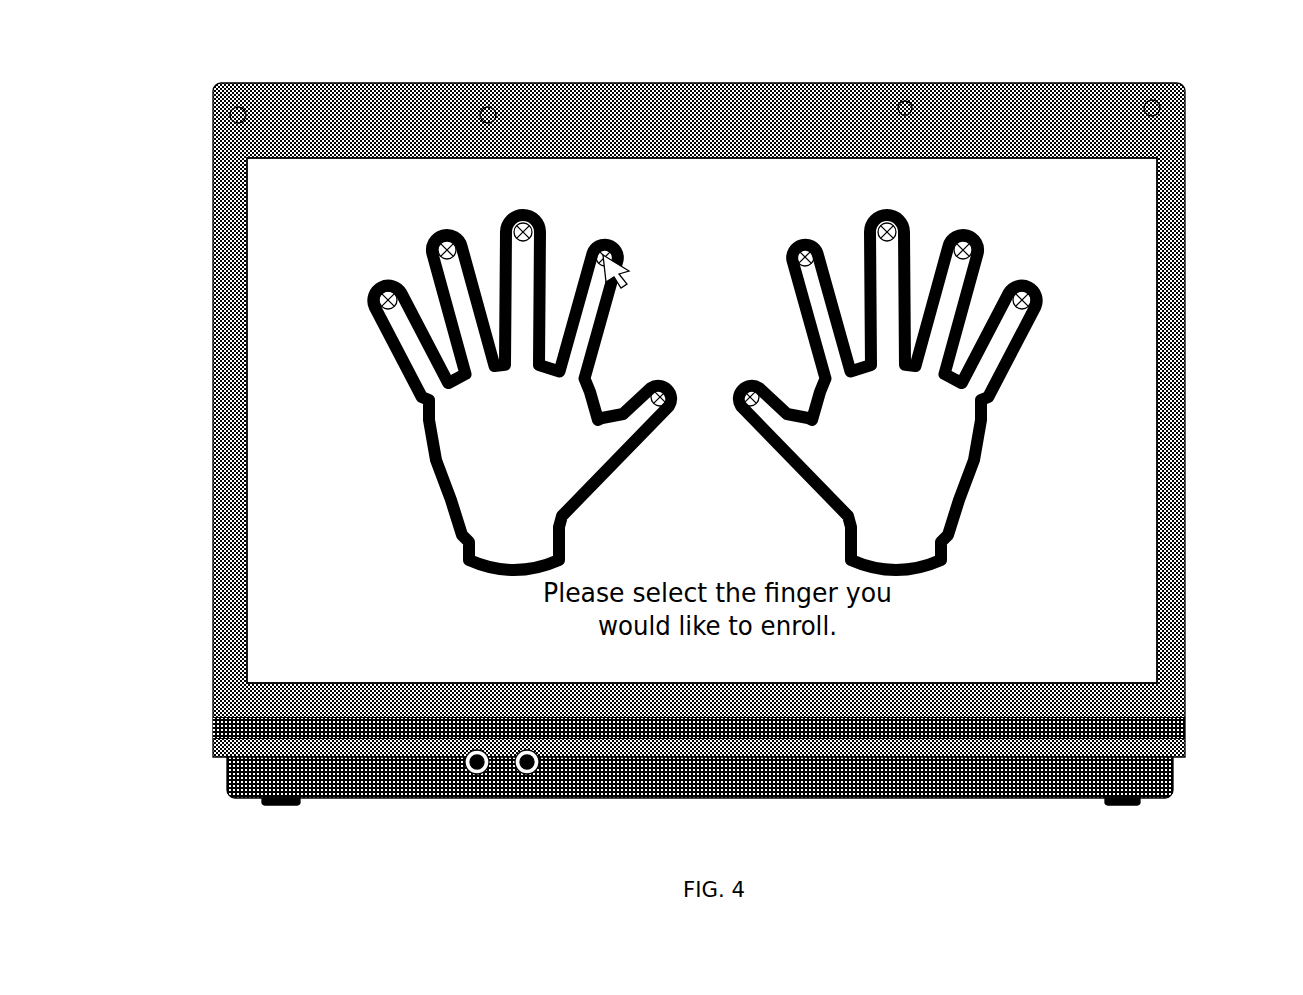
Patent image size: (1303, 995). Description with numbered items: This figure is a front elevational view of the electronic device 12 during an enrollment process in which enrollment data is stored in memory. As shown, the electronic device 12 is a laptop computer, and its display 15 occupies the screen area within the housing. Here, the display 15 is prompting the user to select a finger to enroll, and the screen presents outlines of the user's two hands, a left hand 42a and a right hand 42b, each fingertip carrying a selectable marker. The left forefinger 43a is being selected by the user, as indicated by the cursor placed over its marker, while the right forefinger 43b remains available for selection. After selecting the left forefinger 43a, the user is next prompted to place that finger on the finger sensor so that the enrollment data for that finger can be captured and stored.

The electronic device 12 is at (659, 444).
The display 15 is at (208, 423).
The left hand image 42a is at (485, 433).
The right hand image 42b is at (923, 433).
The left forefinger 43a is at (597, 260).
The right forefinger 43b is at (812, 261).